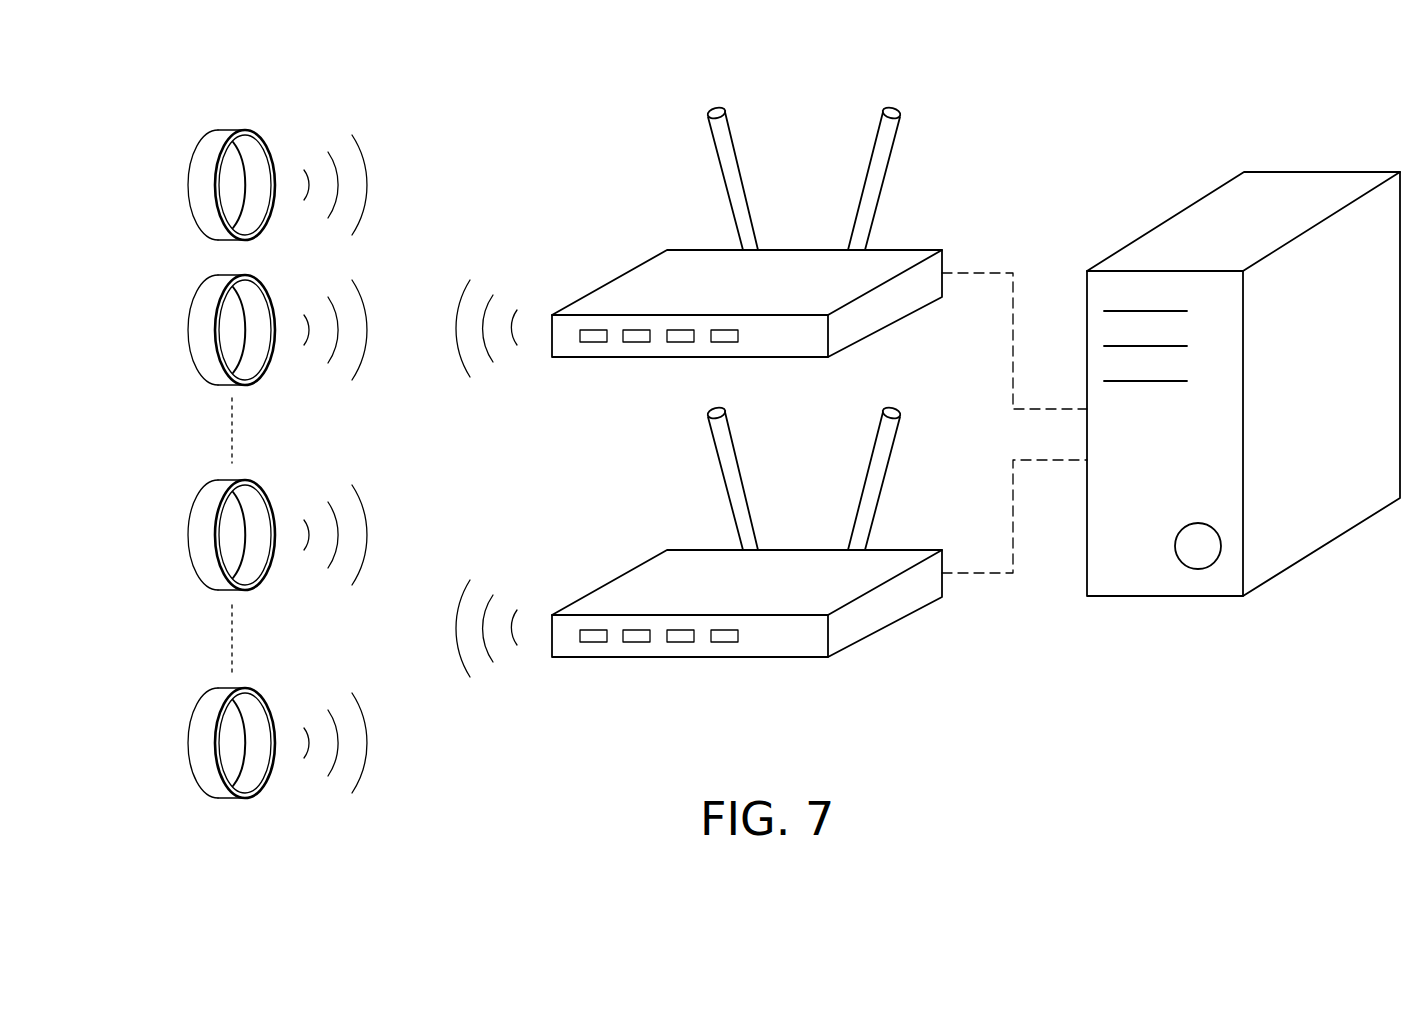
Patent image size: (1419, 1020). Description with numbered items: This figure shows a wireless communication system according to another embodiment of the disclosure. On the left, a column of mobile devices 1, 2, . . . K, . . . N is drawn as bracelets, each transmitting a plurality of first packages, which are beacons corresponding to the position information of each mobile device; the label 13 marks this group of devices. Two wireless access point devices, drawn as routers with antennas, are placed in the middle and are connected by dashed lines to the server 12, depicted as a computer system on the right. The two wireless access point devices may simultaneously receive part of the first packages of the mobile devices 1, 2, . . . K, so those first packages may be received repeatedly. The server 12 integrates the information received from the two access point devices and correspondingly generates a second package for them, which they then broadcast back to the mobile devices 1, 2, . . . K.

The central processing unit 13 is at (180, 59).
The mobile device 1 is at (200, 188).
The mobile device 2 is at (200, 333).
The mobile device K is at (200, 540).
The mobile device N is at (200, 748).
The server 12 is at (1168, 240).